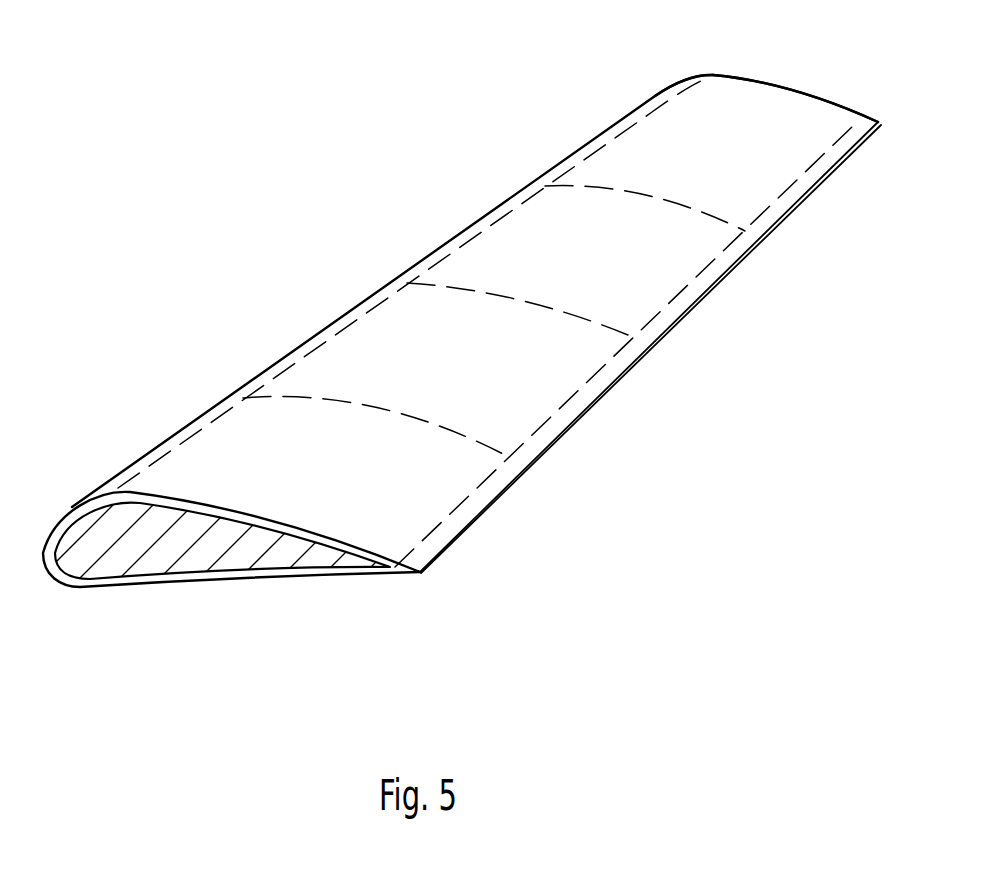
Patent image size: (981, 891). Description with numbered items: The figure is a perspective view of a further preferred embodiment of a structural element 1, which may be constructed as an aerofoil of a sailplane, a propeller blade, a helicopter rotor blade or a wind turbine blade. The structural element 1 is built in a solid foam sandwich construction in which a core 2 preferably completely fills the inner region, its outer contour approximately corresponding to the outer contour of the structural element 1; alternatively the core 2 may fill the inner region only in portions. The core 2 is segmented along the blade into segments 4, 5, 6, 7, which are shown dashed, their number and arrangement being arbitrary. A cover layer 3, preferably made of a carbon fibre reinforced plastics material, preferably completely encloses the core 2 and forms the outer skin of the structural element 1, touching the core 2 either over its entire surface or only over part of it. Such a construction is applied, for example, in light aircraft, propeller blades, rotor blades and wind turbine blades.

The structural element 1 is at (187, 105).
The core 2 is at (162, 566).
The cover layer 3 is at (533, 443).
The segment 4 is at (252, 435).
The segment 5 is at (373, 343).
The segment 6 is at (512, 247).
The segment 7 is at (658, 137).